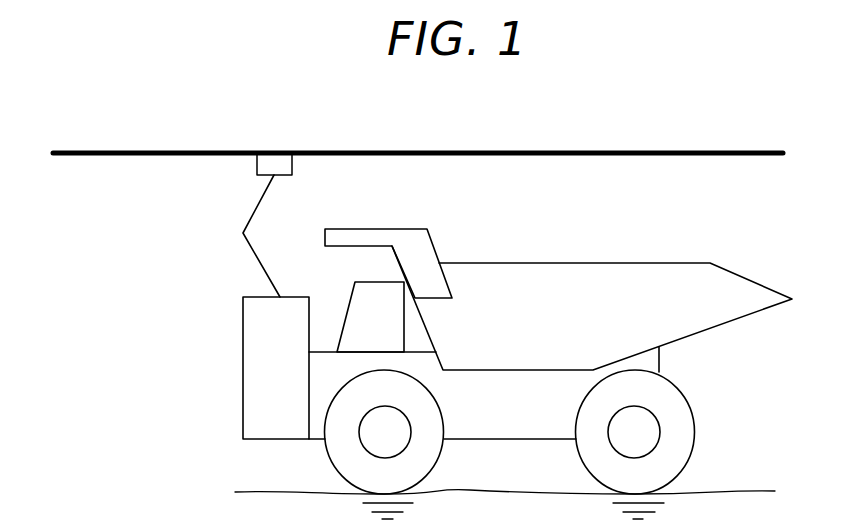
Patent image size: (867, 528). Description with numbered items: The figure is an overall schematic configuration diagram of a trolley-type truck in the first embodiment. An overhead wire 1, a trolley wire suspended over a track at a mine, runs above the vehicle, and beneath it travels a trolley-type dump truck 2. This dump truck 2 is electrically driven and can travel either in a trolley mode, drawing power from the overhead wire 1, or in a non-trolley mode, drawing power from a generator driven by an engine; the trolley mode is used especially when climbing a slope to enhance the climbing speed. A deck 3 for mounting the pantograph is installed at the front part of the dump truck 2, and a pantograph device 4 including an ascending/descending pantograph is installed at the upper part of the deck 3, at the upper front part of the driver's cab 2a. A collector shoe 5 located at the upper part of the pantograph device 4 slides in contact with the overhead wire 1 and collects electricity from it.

The overhead wire 1 is at (580, 151).
The trolley-type dump truck 2 is at (551, 361).
The driver's cab 2a is at (352, 310).
The deck 3 is at (249, 392).
The pantograph device 4 is at (250, 252).
The collector shoe 5 is at (257, 166).